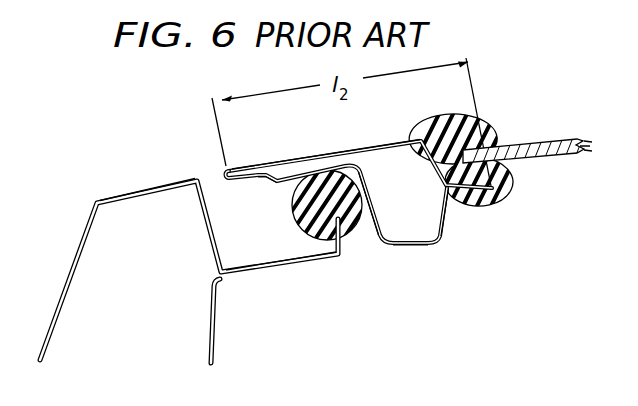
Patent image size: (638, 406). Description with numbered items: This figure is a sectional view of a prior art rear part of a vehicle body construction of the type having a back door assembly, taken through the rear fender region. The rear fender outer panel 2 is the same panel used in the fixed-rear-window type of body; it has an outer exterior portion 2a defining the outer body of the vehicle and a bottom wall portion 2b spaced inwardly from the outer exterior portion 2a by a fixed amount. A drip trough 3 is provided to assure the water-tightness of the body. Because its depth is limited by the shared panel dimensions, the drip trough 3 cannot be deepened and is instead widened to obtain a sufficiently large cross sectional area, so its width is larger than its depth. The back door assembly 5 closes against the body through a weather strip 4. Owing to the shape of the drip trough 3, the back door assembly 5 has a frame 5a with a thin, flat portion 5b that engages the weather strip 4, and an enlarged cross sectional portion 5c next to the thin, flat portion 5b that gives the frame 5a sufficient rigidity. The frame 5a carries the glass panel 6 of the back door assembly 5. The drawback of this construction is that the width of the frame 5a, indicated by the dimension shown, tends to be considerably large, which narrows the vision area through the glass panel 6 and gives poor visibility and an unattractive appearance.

The rear fender outer panel 2 is at (109, 189).
The outer exterior portion 2a is at (162, 185).
The bottom wall portion 2b is at (247, 266).
The drip trough 3 is at (286, 258).
The weather strip 4 is at (348, 222).
The back door assembly 5 is at (502, 127).
The frame 5a is at (392, 138).
The thin, flat portion 5b is at (290, 169).
The enlarged cross sectional portion 5c is at (422, 244).
The glass panel 6 is at (548, 148).